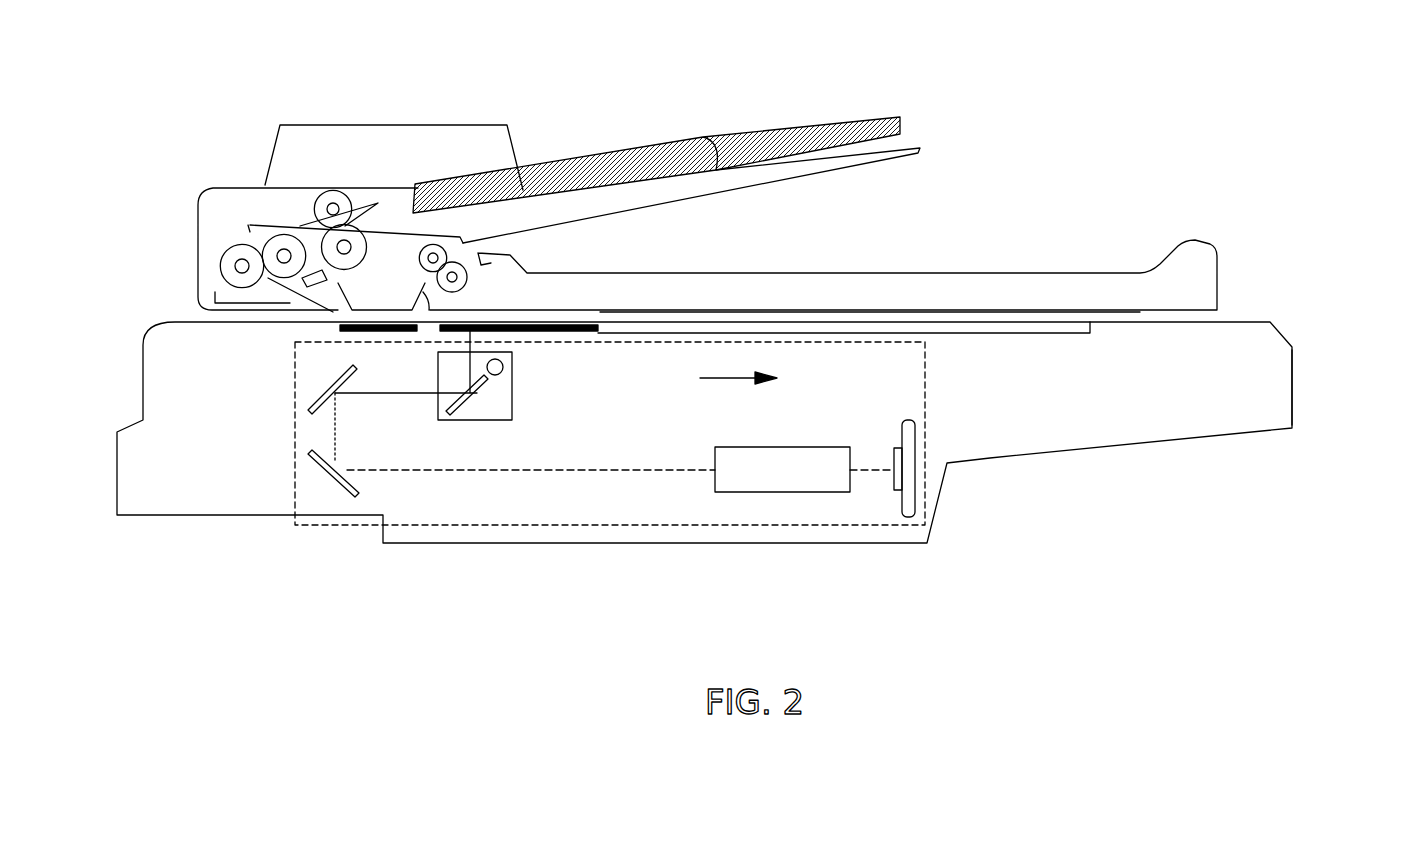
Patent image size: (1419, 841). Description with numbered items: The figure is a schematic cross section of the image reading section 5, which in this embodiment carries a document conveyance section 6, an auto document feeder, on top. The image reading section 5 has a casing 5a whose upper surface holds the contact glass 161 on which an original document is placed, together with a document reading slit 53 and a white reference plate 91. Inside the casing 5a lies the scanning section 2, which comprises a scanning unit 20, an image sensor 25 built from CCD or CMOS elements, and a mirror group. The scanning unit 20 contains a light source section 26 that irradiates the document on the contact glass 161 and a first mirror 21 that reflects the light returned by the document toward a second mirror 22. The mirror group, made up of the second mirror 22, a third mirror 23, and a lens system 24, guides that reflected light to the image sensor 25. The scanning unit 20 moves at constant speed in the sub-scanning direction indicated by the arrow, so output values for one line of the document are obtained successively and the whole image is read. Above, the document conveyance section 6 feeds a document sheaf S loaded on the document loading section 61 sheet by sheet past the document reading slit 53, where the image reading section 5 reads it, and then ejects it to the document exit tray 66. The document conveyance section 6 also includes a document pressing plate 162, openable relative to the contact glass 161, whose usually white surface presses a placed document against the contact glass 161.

The scanning section 2 is at (633, 466).
The image reading section 5 is at (759, 441).
The casing 5a is at (1292, 393).
The document conveyance section 6 is at (773, 168).
The scanning unit 20 is at (470, 422).
The first mirror 21 is at (478, 398).
The second mirror 22 is at (323, 395).
The third mirror 23 is at (330, 483).
The lens system 24 is at (787, 492).
The image sensor 25 is at (917, 482).
The light source section 26 is at (487, 367).
The document reading slit 53 is at (345, 333).
The document loading section 61 is at (913, 135).
The document exit tray 66 is at (1017, 272).
The white reference plate 91 is at (555, 320).
The contact glass 161 is at (1057, 335).
The document pressing plate 162 is at (790, 312).
The document sheaf S is at (758, 137).